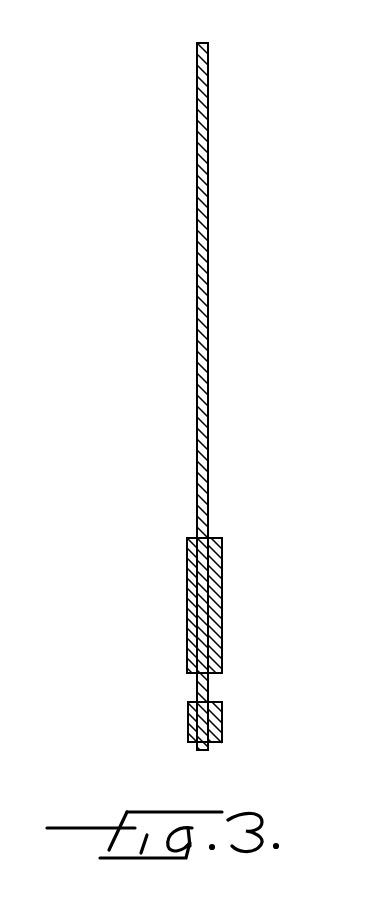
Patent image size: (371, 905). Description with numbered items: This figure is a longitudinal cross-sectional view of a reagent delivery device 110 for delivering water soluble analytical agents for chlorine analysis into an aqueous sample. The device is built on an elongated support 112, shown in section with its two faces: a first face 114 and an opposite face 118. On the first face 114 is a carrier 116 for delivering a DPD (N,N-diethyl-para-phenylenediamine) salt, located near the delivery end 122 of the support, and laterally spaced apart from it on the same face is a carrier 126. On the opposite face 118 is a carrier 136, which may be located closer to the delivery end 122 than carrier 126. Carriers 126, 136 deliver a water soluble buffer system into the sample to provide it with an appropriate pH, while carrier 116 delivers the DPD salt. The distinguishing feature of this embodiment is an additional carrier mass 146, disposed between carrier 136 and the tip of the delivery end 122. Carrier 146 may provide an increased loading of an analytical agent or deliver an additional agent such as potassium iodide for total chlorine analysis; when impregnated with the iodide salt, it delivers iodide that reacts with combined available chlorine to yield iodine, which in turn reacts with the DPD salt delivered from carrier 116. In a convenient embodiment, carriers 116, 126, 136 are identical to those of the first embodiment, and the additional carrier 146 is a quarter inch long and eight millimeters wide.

The reagent delivery device 110 is at (176, 124).
The support 112 is at (218, 268).
The first face 114 is at (197, 312).
The opposite face 118 is at (209, 400).
The carrier 126 is at (179, 606).
The carrier 136 is at (232, 570).
The delivery end 122 is at (209, 697).
The carrier 116 is at (179, 722).
The additional carrier mass 146 is at (231, 720).